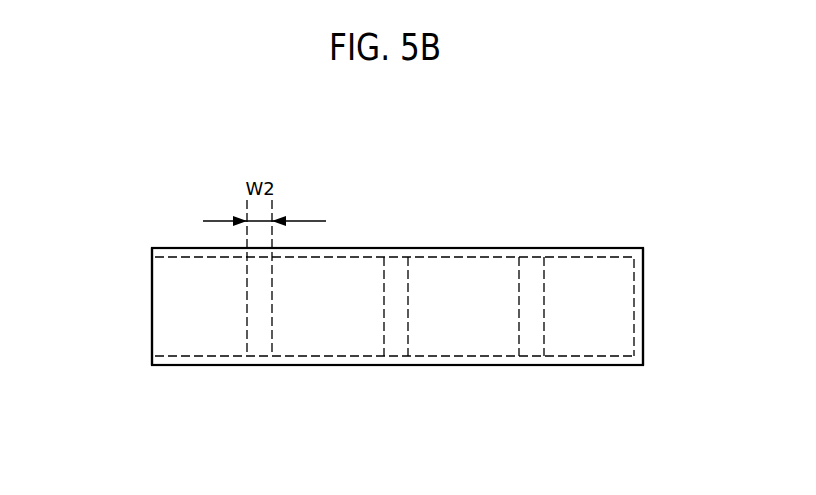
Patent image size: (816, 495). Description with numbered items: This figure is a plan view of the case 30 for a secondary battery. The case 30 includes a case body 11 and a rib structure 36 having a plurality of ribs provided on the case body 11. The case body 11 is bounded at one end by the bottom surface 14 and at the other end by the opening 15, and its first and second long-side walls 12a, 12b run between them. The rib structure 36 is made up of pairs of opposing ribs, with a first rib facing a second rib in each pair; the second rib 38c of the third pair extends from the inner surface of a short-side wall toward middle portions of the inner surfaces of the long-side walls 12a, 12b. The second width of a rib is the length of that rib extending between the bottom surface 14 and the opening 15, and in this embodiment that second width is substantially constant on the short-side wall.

The case for secondary battery 30 is at (126, 214).
The case body 11 is at (361, 240).
The opening 15 is at (152, 305).
The bottom surface 14 is at (643, 302).
The first long-side wall 12a is at (622, 253).
The second long-side wall 12b is at (612, 363).
The rib structure 36 is at (393, 255).
The 2C-th rib 38c is at (262, 323).